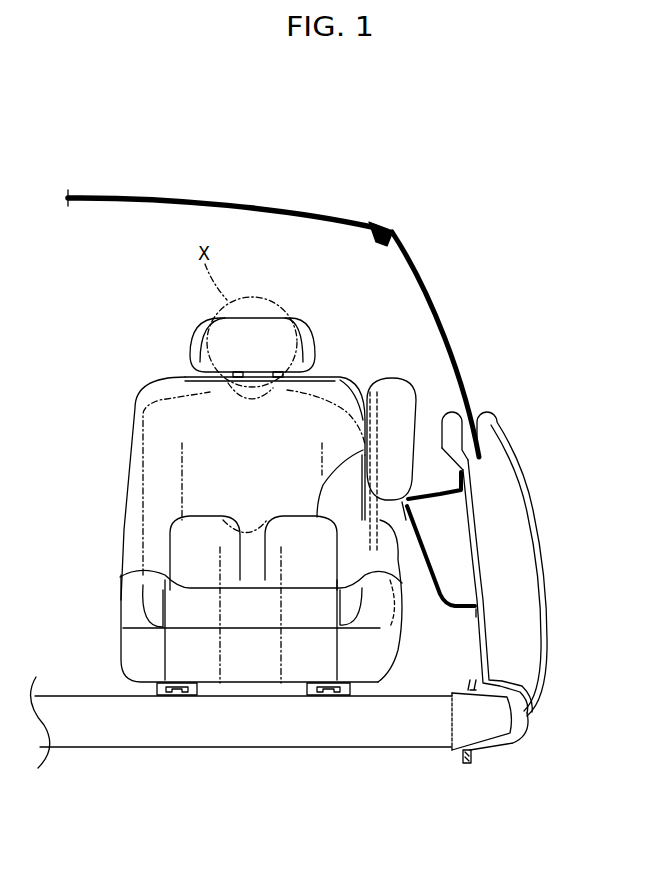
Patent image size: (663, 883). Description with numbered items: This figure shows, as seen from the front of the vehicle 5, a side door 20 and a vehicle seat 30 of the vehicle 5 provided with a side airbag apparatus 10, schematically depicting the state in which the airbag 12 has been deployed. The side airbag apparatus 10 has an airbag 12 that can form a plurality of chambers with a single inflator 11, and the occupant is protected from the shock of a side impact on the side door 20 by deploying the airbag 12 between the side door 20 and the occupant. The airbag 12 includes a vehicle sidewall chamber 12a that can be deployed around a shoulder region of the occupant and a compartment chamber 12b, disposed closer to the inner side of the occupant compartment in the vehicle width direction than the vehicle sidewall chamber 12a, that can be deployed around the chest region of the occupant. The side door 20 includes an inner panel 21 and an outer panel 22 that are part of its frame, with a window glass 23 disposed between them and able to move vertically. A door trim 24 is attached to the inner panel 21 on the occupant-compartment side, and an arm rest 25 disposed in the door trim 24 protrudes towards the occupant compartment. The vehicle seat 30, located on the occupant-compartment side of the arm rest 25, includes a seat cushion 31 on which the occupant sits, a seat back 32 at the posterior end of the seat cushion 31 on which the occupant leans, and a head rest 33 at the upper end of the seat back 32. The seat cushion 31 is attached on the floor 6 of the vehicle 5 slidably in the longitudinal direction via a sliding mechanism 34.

The vehicle 5 is at (177, 191).
The floor 6 is at (90, 696).
The side airbag apparatus 10 is at (361, 348).
The inflator 11 is at (359, 402).
The airbag 12 is at (399, 368).
The vehicle sidewall chamber 12a is at (400, 486).
The compartment chamber 12b is at (345, 483).
The side door 20 is at (525, 497).
The inner panel 21 is at (483, 578).
The outer panel 22 is at (508, 440).
The window glass 23 is at (447, 324).
The door trim 24 is at (455, 412).
The arm rest 25 is at (424, 550).
The vehicle seat 30 is at (212, 500).
The seat cushion 31 is at (233, 587).
The seat back 32 is at (133, 461).
The head rest 33 is at (188, 343).
The sliding mechanism 34 is at (173, 696).